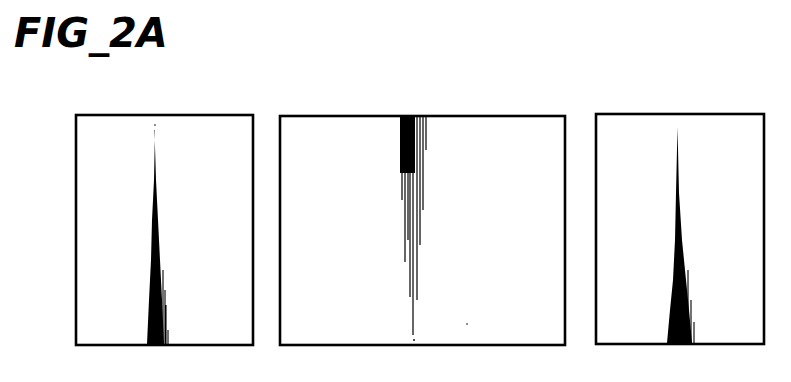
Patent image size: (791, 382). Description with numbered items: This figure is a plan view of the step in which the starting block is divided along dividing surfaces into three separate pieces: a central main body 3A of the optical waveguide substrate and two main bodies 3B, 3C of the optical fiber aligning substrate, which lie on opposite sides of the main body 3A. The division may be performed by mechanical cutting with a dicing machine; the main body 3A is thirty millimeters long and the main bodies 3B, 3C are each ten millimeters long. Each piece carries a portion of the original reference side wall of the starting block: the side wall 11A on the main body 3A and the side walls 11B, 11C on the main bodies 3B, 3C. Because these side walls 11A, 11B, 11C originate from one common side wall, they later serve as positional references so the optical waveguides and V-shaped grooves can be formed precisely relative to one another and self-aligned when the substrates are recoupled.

The side wall of the optical waveguide substrate main body 11A is at (485, 117).
The side wall of the first optical fiber aligning main body 11B is at (139, 117).
The side wall of the second optical fiber aligning main body 11C is at (725, 116).
The main body of the optical waveguide substrate 3A is at (378, 125).
The main body of the optical fiber aligning substrate 3B is at (208, 125).
The main body of the optical fiber aligning substrate 3C is at (656, 123).